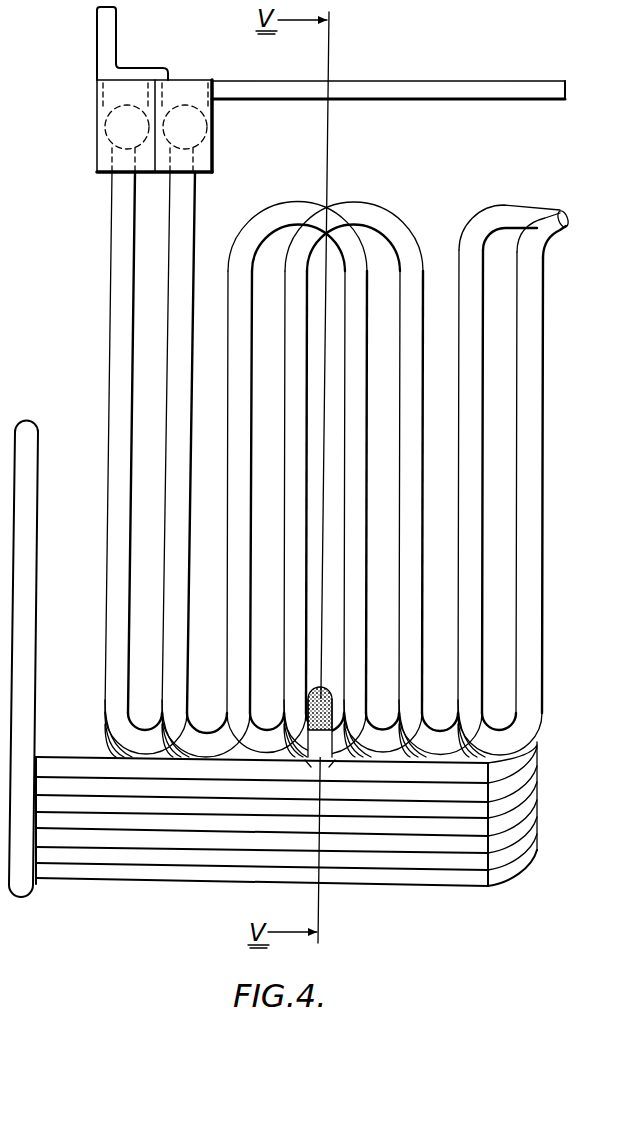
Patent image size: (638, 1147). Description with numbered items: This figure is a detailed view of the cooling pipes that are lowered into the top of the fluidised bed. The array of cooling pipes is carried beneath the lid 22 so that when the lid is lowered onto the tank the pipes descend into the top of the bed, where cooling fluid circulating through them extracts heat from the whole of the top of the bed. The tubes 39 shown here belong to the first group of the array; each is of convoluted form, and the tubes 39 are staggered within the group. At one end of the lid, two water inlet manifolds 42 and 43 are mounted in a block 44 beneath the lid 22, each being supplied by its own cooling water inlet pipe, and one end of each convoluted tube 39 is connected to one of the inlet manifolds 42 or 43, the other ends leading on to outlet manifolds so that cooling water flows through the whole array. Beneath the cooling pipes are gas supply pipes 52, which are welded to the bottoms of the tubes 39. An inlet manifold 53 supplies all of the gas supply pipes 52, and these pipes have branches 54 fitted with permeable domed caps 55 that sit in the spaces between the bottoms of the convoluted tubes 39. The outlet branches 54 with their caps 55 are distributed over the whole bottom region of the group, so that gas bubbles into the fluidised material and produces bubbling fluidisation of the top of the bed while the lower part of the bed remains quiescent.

The lid 22 is at (424, 81).
The tubes 39 is at (118, 283).
The water inlet manifold 42 is at (203, 136).
The water inlet manifold 43 is at (103, 133).
The block 44 is at (213, 163).
The gas supply pipes 52 is at (70, 762).
The inlet manifold 53 is at (27, 654).
The branches 54 is at (313, 738).
The permeable domed caps 55 is at (331, 698).